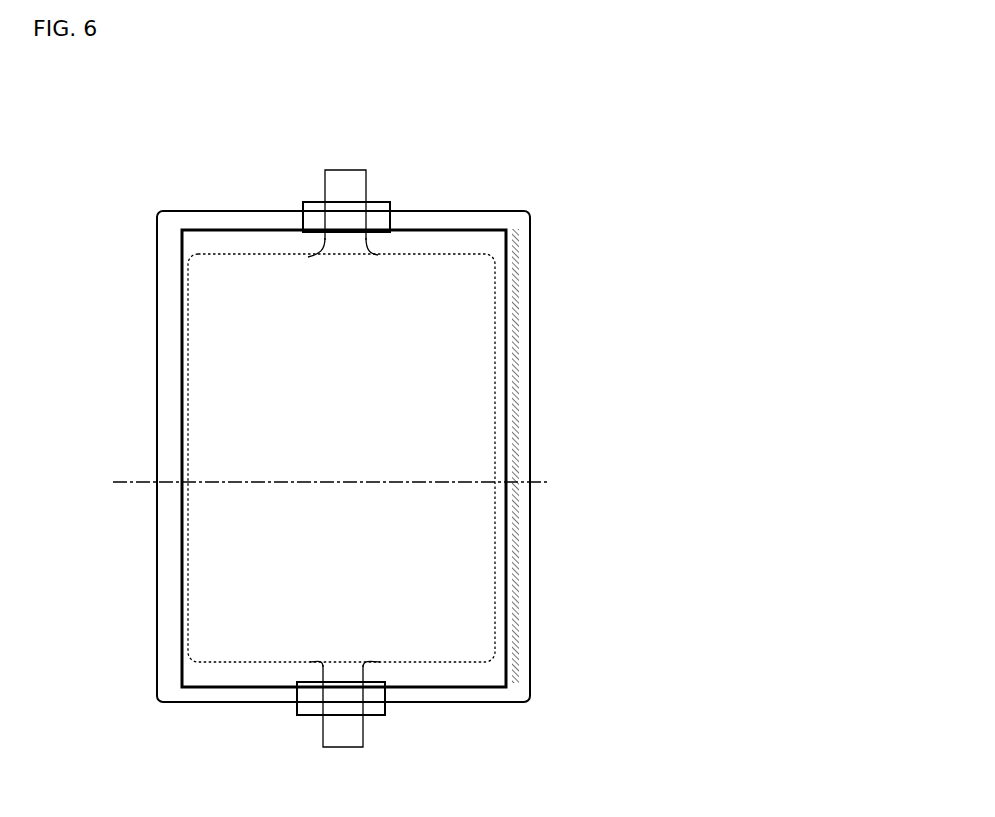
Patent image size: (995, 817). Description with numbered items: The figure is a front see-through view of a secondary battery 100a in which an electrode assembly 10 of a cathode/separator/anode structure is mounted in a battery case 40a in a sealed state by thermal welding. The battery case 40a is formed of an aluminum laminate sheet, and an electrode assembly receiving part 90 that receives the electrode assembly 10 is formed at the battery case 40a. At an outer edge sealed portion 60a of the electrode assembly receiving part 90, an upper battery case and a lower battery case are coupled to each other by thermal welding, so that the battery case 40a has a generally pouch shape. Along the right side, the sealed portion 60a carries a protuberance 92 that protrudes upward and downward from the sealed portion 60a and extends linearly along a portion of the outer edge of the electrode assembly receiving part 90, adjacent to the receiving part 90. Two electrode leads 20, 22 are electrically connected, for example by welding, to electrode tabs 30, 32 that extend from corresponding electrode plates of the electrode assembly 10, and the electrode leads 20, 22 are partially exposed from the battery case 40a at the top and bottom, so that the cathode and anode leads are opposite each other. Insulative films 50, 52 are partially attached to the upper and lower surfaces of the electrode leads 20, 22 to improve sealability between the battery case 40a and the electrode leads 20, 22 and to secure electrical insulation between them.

The secondary battery 100a is at (119, 159).
The electrode assembly 10 is at (466, 381).
The electrode lead 20 is at (326, 170).
The electrode lead 22 is at (363, 744).
The electrode tab 30 is at (375, 254).
The electrode tab 32 is at (317, 663).
The battery case 40a is at (533, 436).
The insulative film 50 is at (380, 202).
The insulative film 52 is at (297, 715).
The outer edge sealed portion 60a is at (528, 290).
The electrode assembly receiving part 90 is at (182, 276).
The protuberance 92 is at (520, 238).